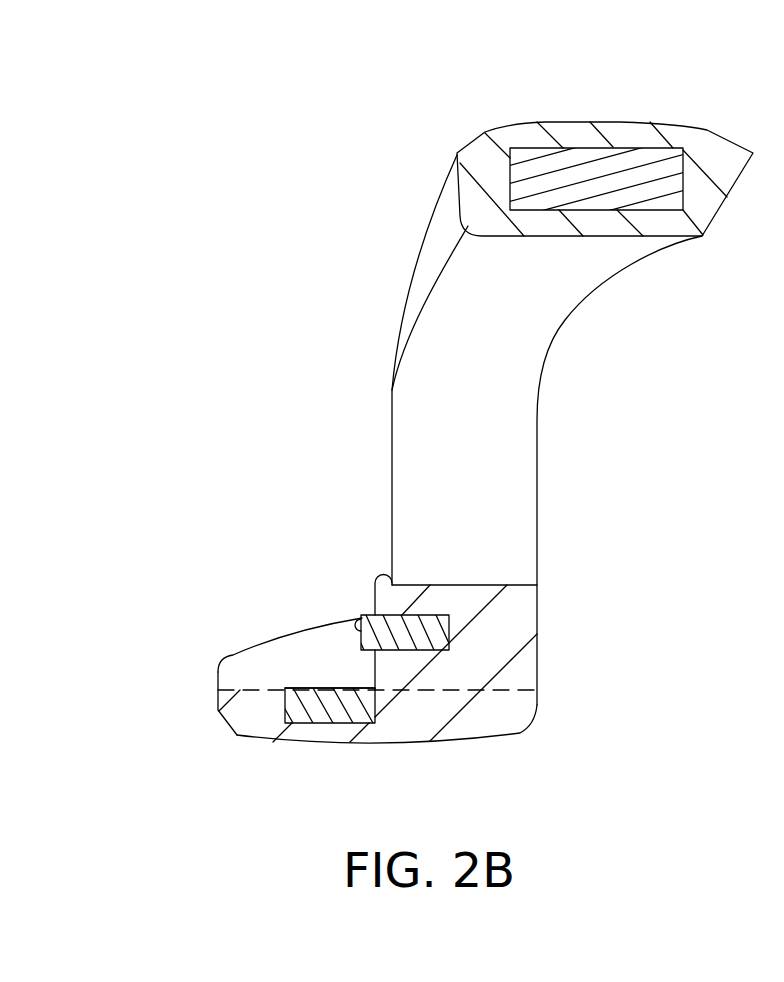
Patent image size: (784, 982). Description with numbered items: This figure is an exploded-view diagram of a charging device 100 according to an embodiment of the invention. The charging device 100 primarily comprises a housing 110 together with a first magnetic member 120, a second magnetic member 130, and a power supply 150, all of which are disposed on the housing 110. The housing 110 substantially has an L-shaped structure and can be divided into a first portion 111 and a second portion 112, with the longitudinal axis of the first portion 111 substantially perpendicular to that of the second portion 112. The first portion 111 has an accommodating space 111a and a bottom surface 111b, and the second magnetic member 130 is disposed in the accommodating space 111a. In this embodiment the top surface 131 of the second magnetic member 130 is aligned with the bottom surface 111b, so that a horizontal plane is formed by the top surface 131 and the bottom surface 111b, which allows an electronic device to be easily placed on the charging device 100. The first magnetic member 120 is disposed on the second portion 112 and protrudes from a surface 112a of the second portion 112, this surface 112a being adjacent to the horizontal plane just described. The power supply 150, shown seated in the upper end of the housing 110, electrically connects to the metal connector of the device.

The charging device 100 is at (117, 79).
The housing 110 is at (717, 162).
The power supply 150 is at (607, 183).
The second portion 112 is at (518, 665).
The surface of the second portion 112a is at (375, 603).
The first portion 111 is at (458, 725).
The accommodating space 111a is at (283, 708).
The bottom surface 111b is at (232, 690).
The first magnetic member 120 is at (415, 632).
The second magnetic member 130 is at (333, 725).
The top surface of the second magnetic member 131 is at (310, 688).